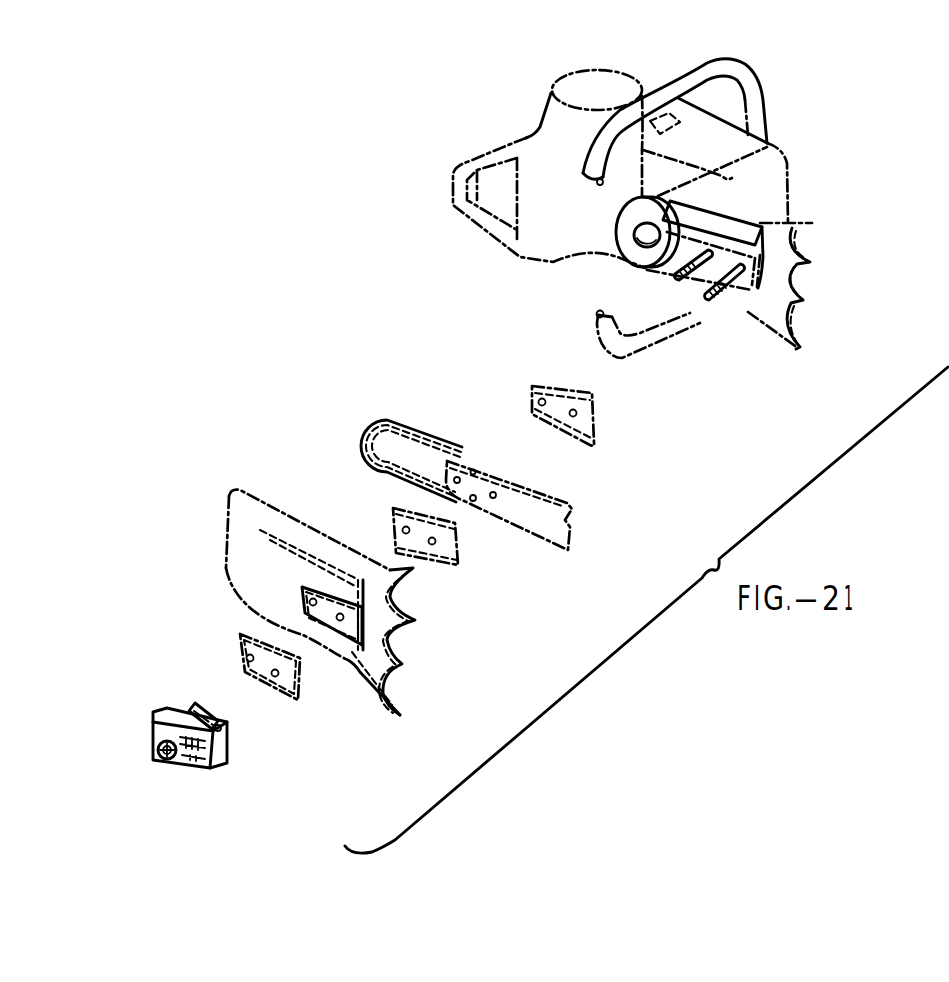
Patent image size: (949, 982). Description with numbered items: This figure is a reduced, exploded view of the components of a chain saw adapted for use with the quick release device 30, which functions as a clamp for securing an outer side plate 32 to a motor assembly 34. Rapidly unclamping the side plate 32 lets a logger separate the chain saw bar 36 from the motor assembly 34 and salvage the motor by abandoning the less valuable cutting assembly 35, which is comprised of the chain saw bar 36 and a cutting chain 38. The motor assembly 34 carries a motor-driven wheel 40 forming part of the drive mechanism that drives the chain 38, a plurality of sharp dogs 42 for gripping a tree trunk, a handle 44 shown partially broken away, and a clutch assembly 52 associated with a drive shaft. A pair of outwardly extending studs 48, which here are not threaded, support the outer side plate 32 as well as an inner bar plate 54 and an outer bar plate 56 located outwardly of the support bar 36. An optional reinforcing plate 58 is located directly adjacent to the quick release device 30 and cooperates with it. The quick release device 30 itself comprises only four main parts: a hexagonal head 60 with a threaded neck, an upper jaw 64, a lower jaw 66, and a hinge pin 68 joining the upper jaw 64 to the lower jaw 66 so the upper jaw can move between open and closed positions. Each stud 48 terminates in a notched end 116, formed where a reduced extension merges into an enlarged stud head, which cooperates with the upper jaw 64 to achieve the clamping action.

The quick release device 30 is at (125, 708).
The outer side plate 32 is at (255, 488).
The motor assembly 34 is at (538, 80).
The cutting assembly 35 is at (385, 408).
The chain saw bar 36 is at (572, 528).
The cutting chain 38 is at (424, 418).
The motor-driven wheel 40 is at (617, 222).
The dogs 42 is at (806, 351).
The handle 44 is at (766, 97).
The studs 48 is at (742, 297).
The clutch assembly 52 is at (770, 148).
The inner bar plate 54 is at (598, 442).
The outer bar plate 56 is at (458, 566).
The reinforcing plate 58 is at (296, 705).
The hexagonal head 60 is at (167, 762).
The upper jaw 64 is at (197, 765).
The lower jaw 66 is at (193, 703).
The hinge pin 68 is at (219, 727).
The notched end 116 is at (702, 302).